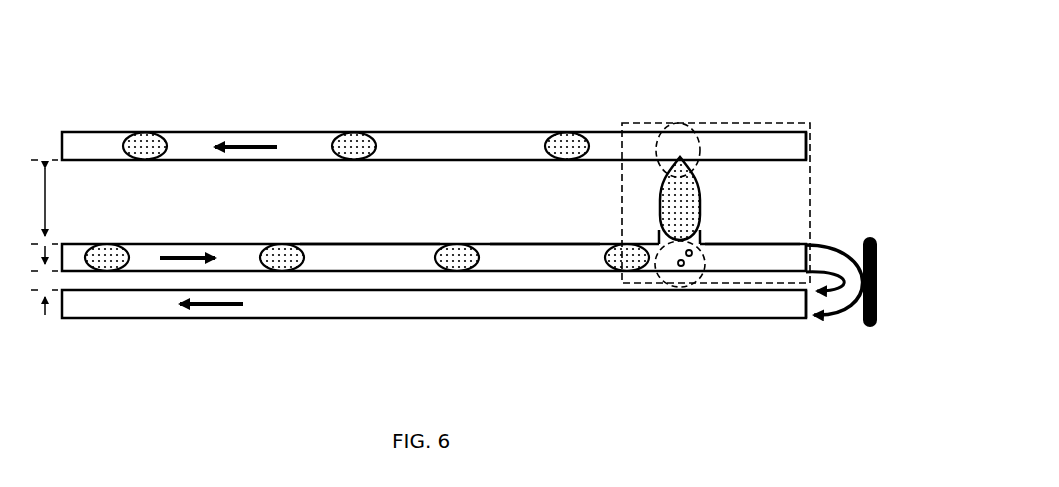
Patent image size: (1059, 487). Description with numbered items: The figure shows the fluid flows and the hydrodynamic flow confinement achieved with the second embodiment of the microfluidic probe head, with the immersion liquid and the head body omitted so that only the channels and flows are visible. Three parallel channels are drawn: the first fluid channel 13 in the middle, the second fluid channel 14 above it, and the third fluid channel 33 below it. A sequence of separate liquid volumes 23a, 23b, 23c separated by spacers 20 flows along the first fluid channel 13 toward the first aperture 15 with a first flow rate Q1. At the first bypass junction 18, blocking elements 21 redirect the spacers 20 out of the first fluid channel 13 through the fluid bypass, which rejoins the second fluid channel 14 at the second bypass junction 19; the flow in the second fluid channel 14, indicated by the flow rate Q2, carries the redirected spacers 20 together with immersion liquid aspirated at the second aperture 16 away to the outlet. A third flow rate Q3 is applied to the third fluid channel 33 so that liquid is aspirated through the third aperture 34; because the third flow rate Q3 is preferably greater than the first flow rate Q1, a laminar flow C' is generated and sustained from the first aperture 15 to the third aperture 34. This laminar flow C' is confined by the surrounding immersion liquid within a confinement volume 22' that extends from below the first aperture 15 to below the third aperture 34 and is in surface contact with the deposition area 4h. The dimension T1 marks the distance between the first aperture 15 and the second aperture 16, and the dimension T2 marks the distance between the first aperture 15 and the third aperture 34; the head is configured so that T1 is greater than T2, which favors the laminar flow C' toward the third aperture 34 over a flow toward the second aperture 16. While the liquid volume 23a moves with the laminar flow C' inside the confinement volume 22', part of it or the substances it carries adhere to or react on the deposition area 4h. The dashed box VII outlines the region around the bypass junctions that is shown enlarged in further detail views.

The first fluid channel 13 is at (525, 243).
The second fluid channel 14 is at (458, 132).
The third fluid channel 33 is at (407, 318).
The spacers 20 is at (140, 147).
The first bypass junction 18 is at (660, 210).
The second bypass junction 19 is at (683, 127).
The blocking elements 21 is at (684, 268).
The liquid volume 23a is at (737, 257).
The liquid volume 23b is at (555, 260).
The channel section 23c is at (370, 258).
The first aperture 15 is at (802, 258).
The second aperture 16 is at (813, 145).
The third aperture 34 is at (802, 303).
The confinement volume 22' is at (840, 332).
The wall element 4h is at (880, 318).
The laminar flow C' is at (853, 233).
The first flow rate Q1 is at (188, 252).
The flow rate in first channel Q2 is at (250, 147).
The third flow rate Q3 is at (217, 305).
The distance between first and second apertures T1 is at (36, 202).
The distance between first and third apertures T2 is at (32, 280).
The detail view region VII, VIII, IX VII is at (753, 123).